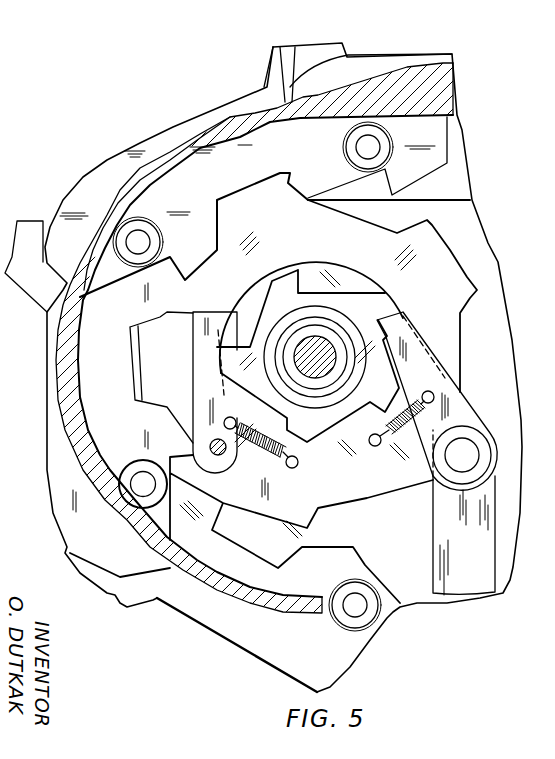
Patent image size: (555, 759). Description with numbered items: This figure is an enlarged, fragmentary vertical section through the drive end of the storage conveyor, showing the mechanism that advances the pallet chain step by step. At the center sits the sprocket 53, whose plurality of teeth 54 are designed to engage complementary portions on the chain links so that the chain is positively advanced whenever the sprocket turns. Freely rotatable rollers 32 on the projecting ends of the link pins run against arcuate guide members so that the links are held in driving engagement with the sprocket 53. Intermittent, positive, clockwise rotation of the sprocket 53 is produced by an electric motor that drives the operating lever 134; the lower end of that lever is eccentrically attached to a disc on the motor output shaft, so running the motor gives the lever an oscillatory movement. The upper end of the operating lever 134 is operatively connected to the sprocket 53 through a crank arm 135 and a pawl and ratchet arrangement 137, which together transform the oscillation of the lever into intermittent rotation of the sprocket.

The rollers 32 is at (156, 223).
The sprocket 53 is at (460, 263).
The teeth 54 is at (427, 225).
The operating lever 134 is at (437, 562).
The crank arm 135 is at (413, 483).
The pawl and ratchet arrangement 137 is at (357, 290).